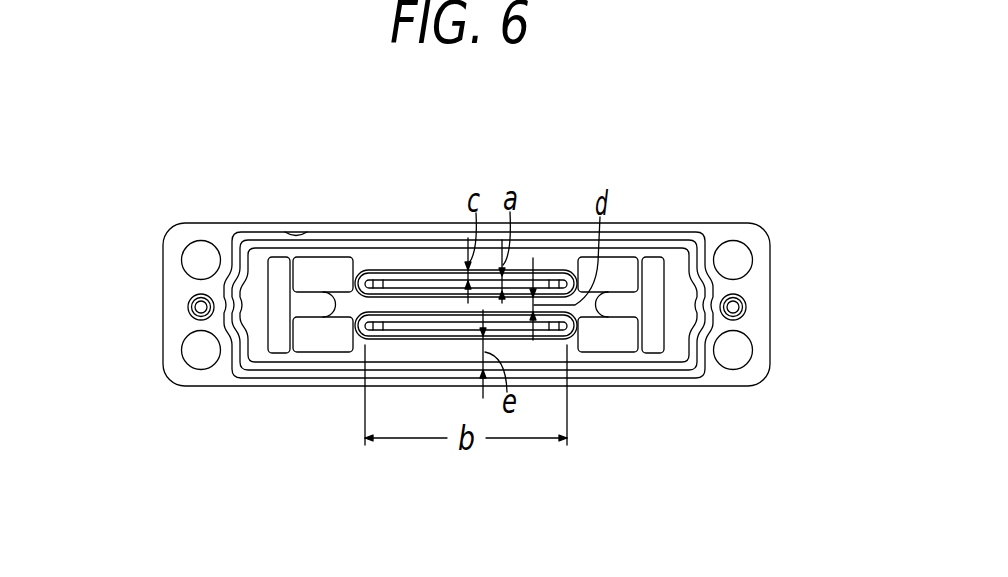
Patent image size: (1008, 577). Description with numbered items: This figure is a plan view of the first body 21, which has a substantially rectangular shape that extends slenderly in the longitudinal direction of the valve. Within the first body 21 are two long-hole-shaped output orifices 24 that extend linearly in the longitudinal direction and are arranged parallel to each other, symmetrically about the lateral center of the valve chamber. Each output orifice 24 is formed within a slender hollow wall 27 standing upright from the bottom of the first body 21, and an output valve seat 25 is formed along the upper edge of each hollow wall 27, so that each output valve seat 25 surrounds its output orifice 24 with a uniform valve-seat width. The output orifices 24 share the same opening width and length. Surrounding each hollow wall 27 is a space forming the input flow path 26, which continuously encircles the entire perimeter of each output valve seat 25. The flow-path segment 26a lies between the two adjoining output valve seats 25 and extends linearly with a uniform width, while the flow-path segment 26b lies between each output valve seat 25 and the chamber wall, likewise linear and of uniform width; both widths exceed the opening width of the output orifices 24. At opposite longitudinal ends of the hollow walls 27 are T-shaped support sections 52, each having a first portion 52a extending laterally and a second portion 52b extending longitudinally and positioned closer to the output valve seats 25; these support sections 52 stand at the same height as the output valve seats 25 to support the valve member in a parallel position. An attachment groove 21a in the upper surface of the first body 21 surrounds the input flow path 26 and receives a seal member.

The first body 21 is at (260, 224).
The attachment groove 21a is at (307, 233).
The output orifice 24 is at (413, 325).
The output valve seat 25 is at (454, 321).
The input flow path 26 is at (362, 247).
The flow-path segment 26a is at (518, 305).
The flow-path segment 26b is at (542, 352).
The hollow wall 27 is at (547, 272).
The support section 52 is at (486, 304).
The first portion 52a is at (653, 273).
The second portion 52b is at (485, 308).